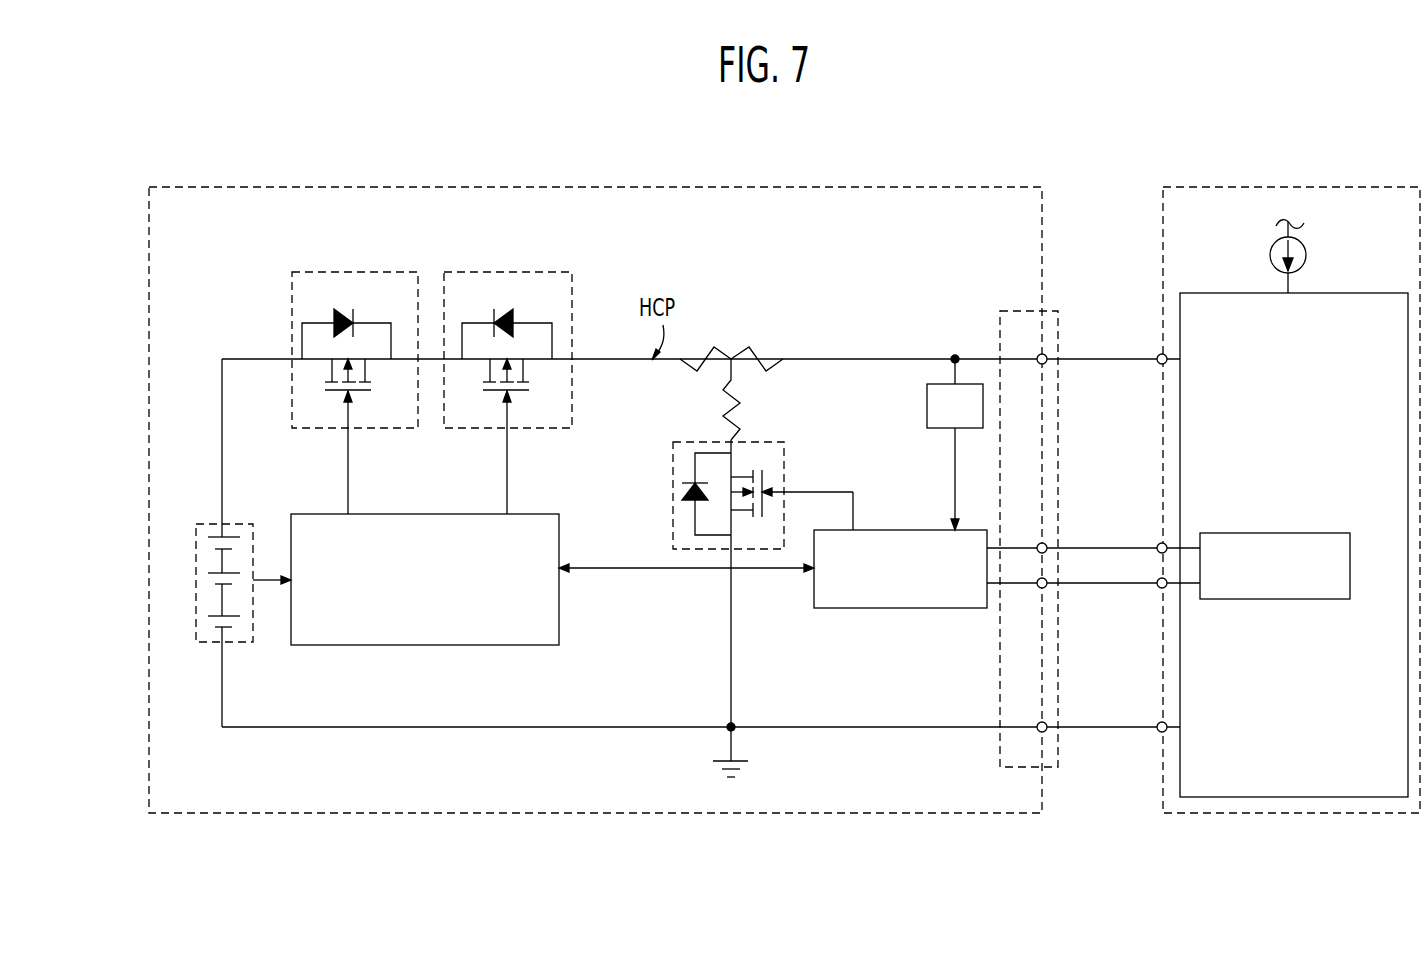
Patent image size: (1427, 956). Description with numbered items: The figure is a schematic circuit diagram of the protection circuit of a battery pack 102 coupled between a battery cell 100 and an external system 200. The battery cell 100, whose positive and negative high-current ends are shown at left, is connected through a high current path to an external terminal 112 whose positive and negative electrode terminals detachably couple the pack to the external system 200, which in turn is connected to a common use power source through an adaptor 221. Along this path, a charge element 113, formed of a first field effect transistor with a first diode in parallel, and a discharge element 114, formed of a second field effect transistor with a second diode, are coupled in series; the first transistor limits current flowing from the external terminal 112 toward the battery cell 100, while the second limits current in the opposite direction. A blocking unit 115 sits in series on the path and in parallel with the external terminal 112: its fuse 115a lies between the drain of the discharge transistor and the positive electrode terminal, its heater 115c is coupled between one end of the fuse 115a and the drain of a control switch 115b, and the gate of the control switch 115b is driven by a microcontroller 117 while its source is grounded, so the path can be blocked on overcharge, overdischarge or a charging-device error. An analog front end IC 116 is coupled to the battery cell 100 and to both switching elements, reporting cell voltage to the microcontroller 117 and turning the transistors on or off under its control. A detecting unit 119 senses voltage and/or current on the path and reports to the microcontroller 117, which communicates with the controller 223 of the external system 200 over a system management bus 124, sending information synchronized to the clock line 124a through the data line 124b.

The battery cell 100 is at (238, 524).
The battery pack 102 is at (670, 187).
The external terminal 112 is at (1012, 311).
The charge element 113 is at (355, 272).
The discharge element 114 is at (516, 272).
The blocking unit 115 is at (696, 448).
The fuse 115a is at (695, 368).
The control switch 115b is at (590, 430).
The heater 115c is at (723, 405).
The analog front end (AFE) IC 116 is at (416, 645).
The microcontroller 117 is at (932, 608).
The detecting unit 119 is at (944, 384).
The system management bus (SMBUS) 124 is at (1093, 567).
The clock line 124a is at (1142, 546).
The data line 124b is at (1137, 585).
The external system 200 is at (1331, 187).
The adaptor 221 is at (1307, 253).
The controller 223 is at (1275, 599).